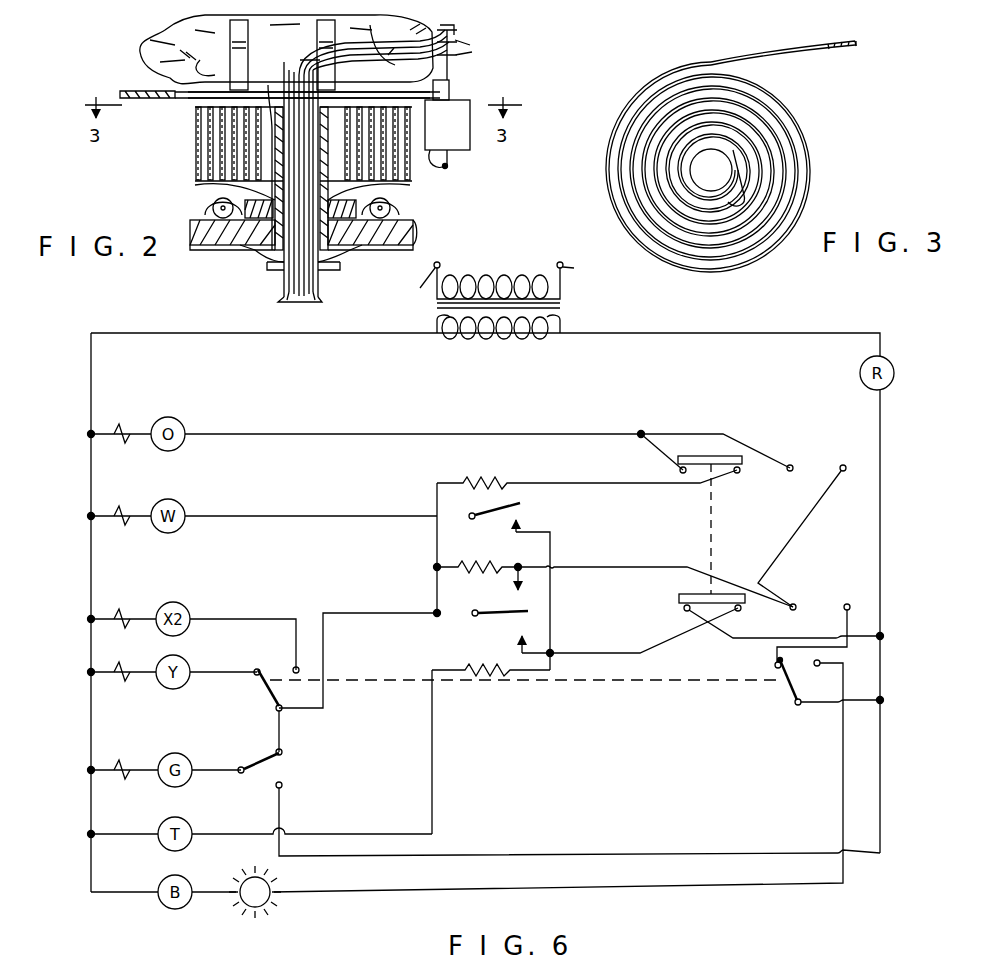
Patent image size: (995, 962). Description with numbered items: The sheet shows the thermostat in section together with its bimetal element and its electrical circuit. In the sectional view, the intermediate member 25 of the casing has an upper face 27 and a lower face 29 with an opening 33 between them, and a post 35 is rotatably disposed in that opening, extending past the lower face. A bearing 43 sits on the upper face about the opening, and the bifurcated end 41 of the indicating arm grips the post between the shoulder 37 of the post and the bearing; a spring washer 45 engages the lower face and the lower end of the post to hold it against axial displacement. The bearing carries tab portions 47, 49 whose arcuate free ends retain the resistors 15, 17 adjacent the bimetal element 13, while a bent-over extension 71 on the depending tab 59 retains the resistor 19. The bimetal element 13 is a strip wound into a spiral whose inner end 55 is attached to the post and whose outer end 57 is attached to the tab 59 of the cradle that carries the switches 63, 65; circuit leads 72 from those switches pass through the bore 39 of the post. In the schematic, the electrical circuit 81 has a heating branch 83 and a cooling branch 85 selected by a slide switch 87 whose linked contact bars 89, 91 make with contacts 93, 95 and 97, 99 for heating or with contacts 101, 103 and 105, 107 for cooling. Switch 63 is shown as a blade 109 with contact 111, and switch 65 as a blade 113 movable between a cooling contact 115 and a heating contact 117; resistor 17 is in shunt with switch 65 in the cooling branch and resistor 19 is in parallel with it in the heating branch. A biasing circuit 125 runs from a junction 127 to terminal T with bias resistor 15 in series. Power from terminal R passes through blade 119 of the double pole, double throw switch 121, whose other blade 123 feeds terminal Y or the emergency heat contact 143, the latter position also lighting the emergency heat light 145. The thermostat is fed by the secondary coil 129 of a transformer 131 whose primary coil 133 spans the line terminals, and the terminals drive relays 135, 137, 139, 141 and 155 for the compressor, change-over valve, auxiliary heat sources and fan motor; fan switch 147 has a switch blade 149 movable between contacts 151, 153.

In FIG. 3, the bimetal element 13 is at (824, 178).
In FIG. 2, the resistor 15 is at (210, 252).
In FIG. 6, the resistor 15 is at (486, 678).
In FIG. 2, the resistor 17 is at (405, 214).
In FIG. 6, the resistor 17 is at (474, 565).
In FIG. 2, the resistor 19 is at (452, 166).
In FIG. 6, the resistor 19 is at (490, 484).
In FIG. 2, the intermediate member 25 is at (413, 236).
In FIG. 2, the upper face 27 is at (190, 215).
In FIG. 2, the lower face 29 is at (198, 246).
In FIG. 2, the opening 33 is at (382, 247).
In FIG. 2, the post 35 is at (268, 82).
In FIG. 3, the post 35 is at (728, 160).
In FIG. 2, the shoulder 37 is at (195, 188).
In FIG. 2, the bore 39 is at (292, 80).
In FIG. 2, the bifurcated end 41 is at (410, 190).
In FIG. 2, the bearing 43 is at (240, 250).
In FIG. 2, the spring washer 45 is at (368, 248).
In FIG. 2, the tab portion 47 is at (213, 206).
In FIG. 2, the tab portion 49 is at (400, 214).
In FIG. 3, the inner end 55 is at (742, 166).
In FIG. 3, the outer end 57 is at (780, 43).
In FIG. 3, the tab 59 is at (825, 48).
In FIG. 6, the switch 63 is at (543, 560).
In FIG. 2, the switch 65 is at (170, 32).
In FIG. 6, the switch 65 is at (508, 706).
In FIG. 2, the bent-over extension 71 is at (470, 138).
In FIG. 2, the circuit leads 72 is at (285, 276).
In FIG. 6, the electrical circuit 81 is at (315, 396).
In FIG. 6, the heating branch 83 is at (761, 613).
In FIG. 6, the cooling branch 85 is at (614, 571).
In FIG. 6, the slide switch 87 is at (693, 495).
In FIG. 6, the contact bar 89 is at (710, 456).
In FIG. 6, the contact bar 91 is at (690, 594).
In FIG. 6, the contact 93 is at (680, 472).
In FIG. 6, the contact 95 is at (738, 474).
In FIG. 6, the contact 97 is at (684, 612).
In FIG. 6, the contact 99 is at (740, 612).
In FIG. 6, the contact 101 is at (790, 465).
In FIG. 6, the contact 103 is at (843, 465).
In FIG. 6, the contact 105 is at (794, 604).
In FIG. 6, the contact 107 is at (848, 604).
In FIG. 6, the blade 109 is at (510, 505).
In FIG. 6, the contact 111 is at (528, 520).
In FIG. 6, the blade 113 is at (478, 618).
In FIG. 6, the cooling contact 115 is at (514, 590).
In FIG. 6, the heating contact 117 is at (518, 642).
In FIG. 6, the blade 119 is at (794, 704).
In FIG. 6, the double pole, double throw switch 121 is at (650, 686).
In FIG. 6, the blade 123 is at (270, 706).
In FIG. 6, the biasing circuit 125 is at (436, 787).
In FIG. 6, the junction 127 is at (556, 656).
In FIG. 6, the secondary coil 129 is at (482, 340).
In FIG. 6, the transformer 131 is at (500, 313).
In FIG. 6, the primary coil 133 is at (486, 285).
In FIG. 6, the relay 135 is at (119, 662).
In FIG. 6, the relay 137 is at (119, 424).
In FIG. 6, the relay 139 is at (119, 506).
In FIG. 6, the relay 141 is at (119, 609).
In FIG. 6, the emergency heat contact 143 is at (293, 666).
In FIG. 6, the emergency heat light 145 is at (275, 890).
In FIG. 6, the switch 147 is at (535, 793).
In FIG. 6, the switch blade 149 is at (266, 758).
In FIG. 6, the contact 151 is at (284, 752).
In FIG. 6, the contact 153 is at (284, 785).
In FIG. 6, the relay 155 is at (119, 760).